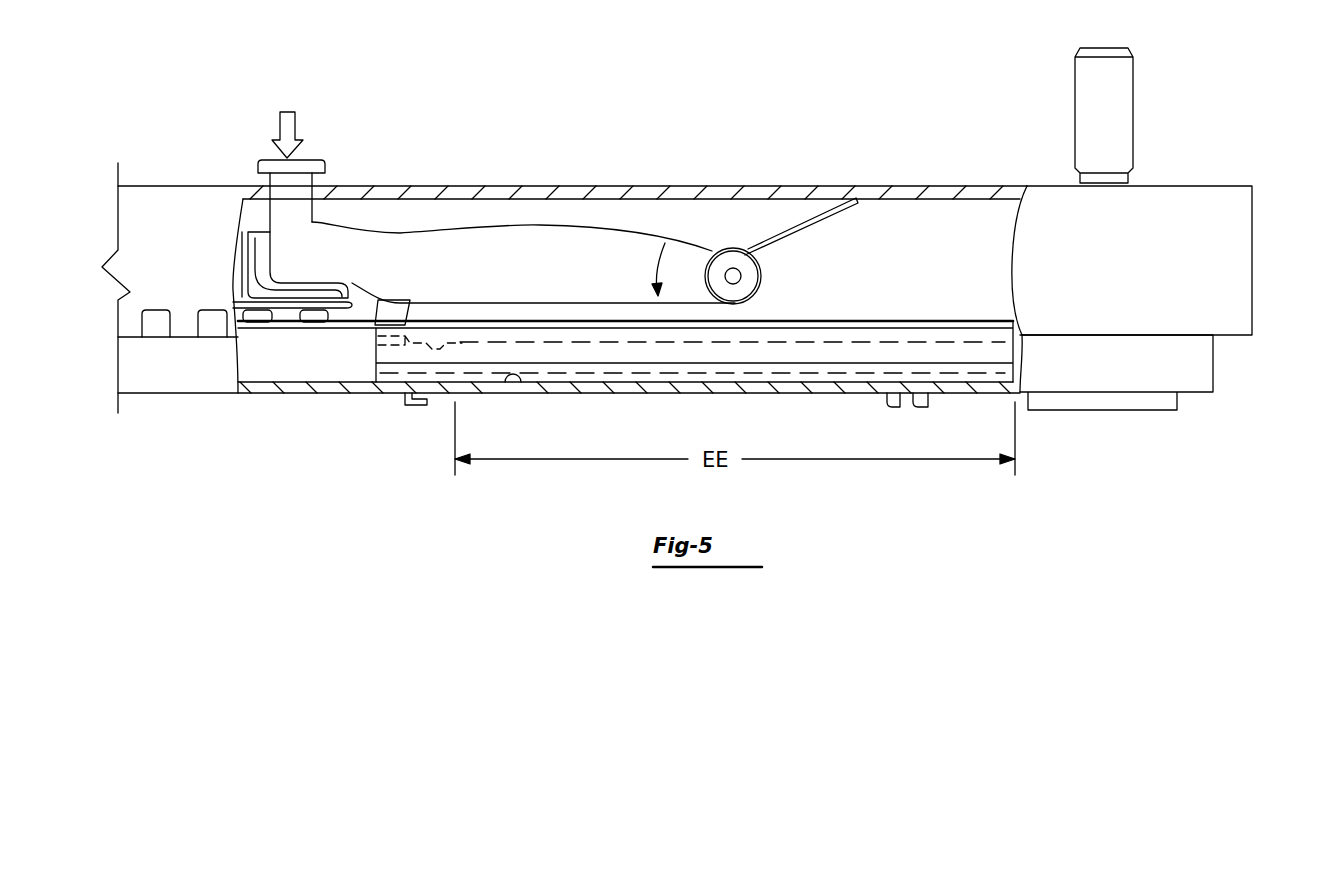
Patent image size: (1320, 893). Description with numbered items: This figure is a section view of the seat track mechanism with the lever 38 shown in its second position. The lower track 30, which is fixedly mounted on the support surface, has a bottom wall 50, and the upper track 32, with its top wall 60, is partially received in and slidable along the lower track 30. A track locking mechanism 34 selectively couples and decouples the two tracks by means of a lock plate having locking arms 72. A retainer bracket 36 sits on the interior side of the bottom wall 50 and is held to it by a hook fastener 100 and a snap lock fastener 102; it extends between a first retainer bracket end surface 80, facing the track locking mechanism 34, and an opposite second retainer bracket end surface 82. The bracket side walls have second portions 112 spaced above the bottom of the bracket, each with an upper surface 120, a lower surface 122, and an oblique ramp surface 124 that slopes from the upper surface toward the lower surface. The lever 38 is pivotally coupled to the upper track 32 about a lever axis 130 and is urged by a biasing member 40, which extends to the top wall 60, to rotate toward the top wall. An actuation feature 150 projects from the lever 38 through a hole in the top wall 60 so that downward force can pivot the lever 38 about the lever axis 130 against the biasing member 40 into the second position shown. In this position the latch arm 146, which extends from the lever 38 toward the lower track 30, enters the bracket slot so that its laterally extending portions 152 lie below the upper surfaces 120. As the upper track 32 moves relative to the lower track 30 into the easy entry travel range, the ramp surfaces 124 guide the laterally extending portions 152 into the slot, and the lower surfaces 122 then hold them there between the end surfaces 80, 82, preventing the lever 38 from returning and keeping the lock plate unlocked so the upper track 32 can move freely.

The lower track 30 is at (1213, 375).
The upper track 32 is at (1252, 270).
The track locking mechanism 34 is at (256, 218).
The retainer bracket 36 is at (805, 318).
The lever 38 is at (566, 270).
The biasing member 40 is at (813, 217).
The bottom wall 50 is at (778, 375).
The top wall 60 is at (607, 186).
The locking arms 72 is at (215, 313).
The first retainer bracket end surface 80 is at (373, 353).
The second retainer bracket end surface 82 is at (1012, 358).
The fastener 100 is at (425, 405).
The fastener 102 is at (928, 405).
The second portion 112 is at (852, 335).
The upper surface 120 is at (928, 333).
The lower surface 122 is at (665, 345).
The ramp surface 124 is at (438, 343).
The lever axis 130 is at (725, 280).
The latch arm 146 is at (397, 312).
The actuation feature 150 is at (323, 162).
The laterally extending portions 152 is at (373, 338).